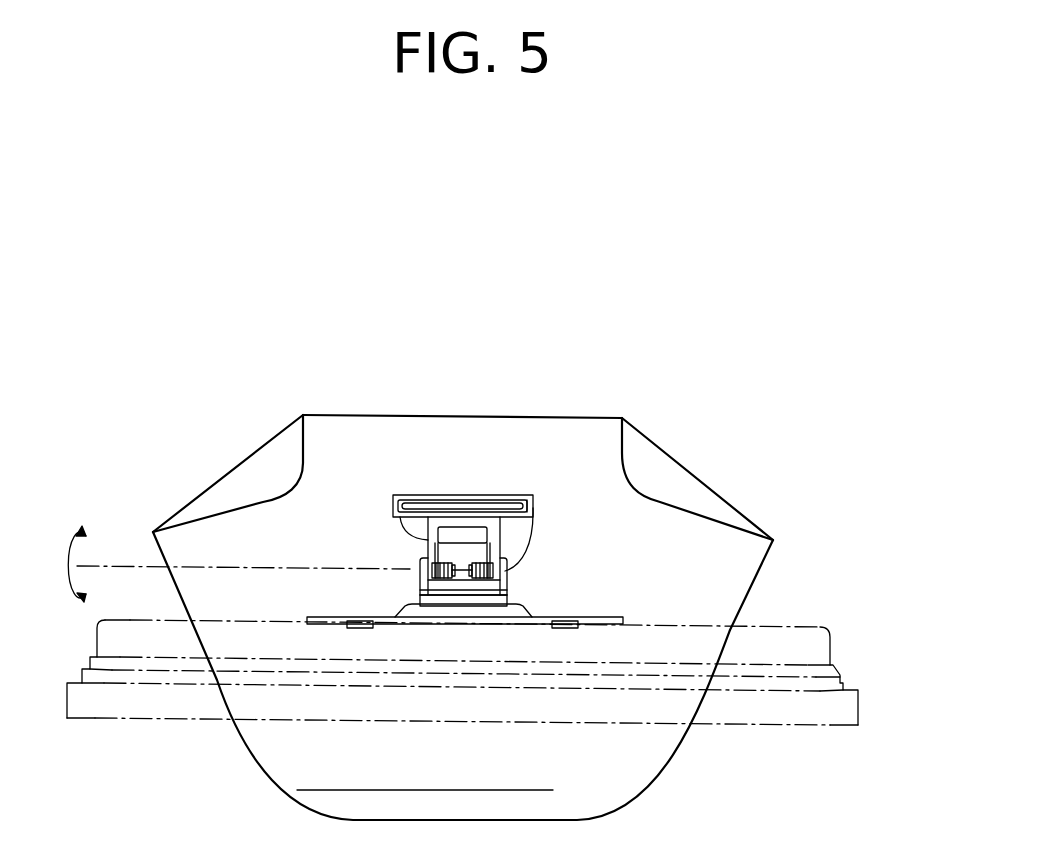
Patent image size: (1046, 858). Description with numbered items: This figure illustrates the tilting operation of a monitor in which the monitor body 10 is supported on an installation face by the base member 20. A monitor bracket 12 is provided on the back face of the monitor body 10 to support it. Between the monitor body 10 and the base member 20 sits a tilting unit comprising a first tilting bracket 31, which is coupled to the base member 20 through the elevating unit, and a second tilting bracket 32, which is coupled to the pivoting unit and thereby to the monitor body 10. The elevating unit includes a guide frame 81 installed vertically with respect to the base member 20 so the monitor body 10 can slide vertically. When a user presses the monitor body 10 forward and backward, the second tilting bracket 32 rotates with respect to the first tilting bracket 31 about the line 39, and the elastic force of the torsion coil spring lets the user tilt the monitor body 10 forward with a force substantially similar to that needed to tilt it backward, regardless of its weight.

The monitor body 10 is at (858, 707).
The monitor bracket 12 is at (591, 617).
The base member 20 is at (336, 436).
The first tilting bracket 31 is at (392, 494).
The second tilting bracket 32 is at (539, 500).
The guide frame 81 is at (462, 496).
The line 39 is at (117, 552).